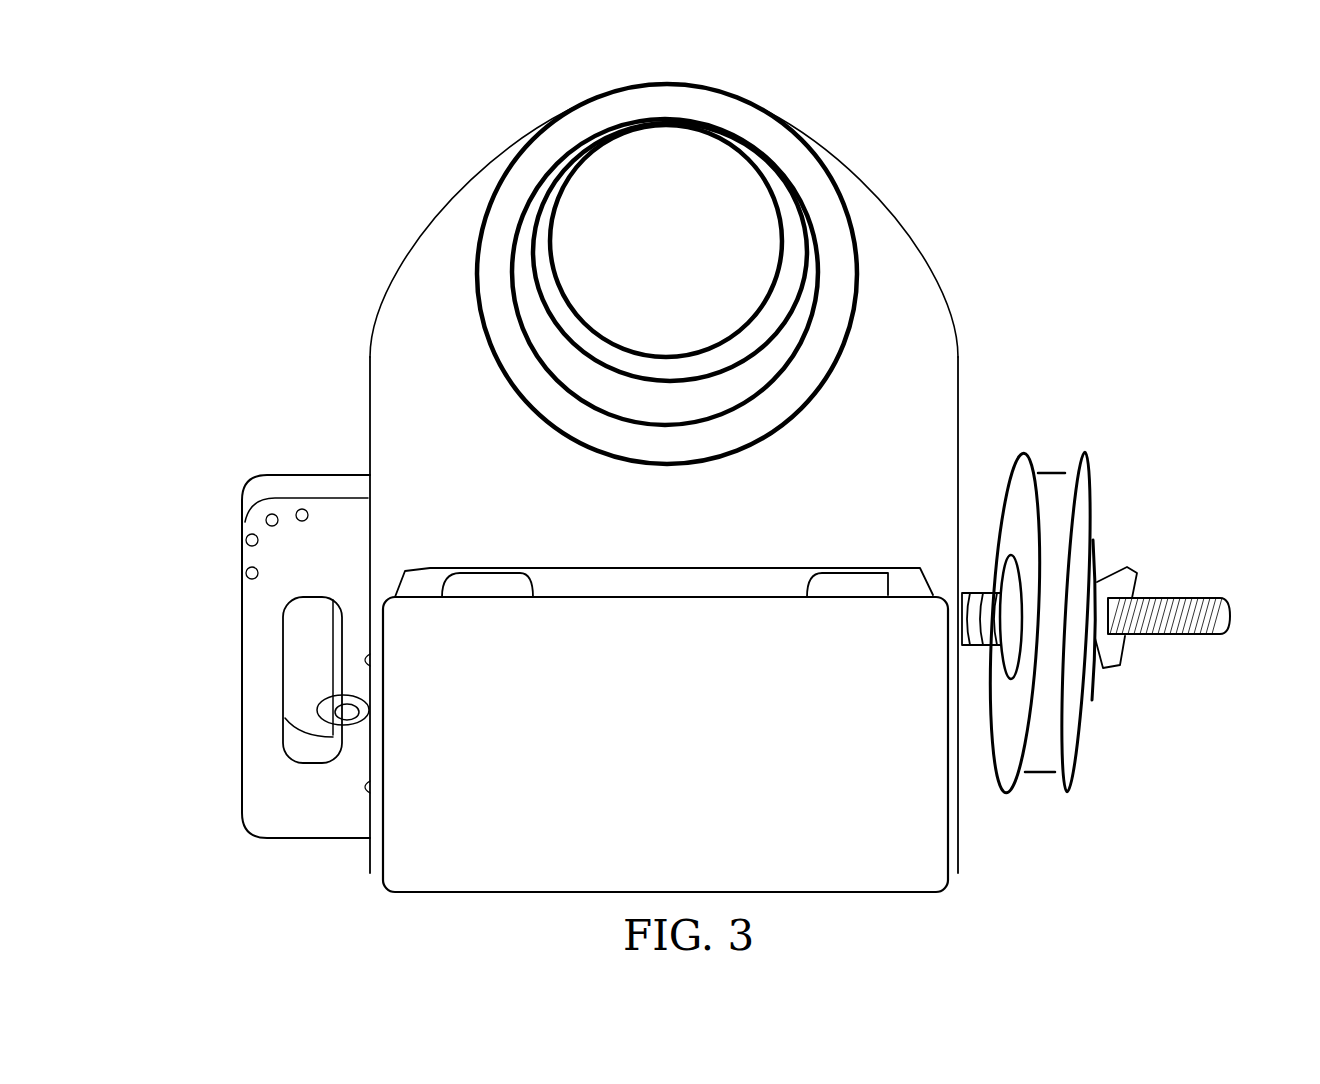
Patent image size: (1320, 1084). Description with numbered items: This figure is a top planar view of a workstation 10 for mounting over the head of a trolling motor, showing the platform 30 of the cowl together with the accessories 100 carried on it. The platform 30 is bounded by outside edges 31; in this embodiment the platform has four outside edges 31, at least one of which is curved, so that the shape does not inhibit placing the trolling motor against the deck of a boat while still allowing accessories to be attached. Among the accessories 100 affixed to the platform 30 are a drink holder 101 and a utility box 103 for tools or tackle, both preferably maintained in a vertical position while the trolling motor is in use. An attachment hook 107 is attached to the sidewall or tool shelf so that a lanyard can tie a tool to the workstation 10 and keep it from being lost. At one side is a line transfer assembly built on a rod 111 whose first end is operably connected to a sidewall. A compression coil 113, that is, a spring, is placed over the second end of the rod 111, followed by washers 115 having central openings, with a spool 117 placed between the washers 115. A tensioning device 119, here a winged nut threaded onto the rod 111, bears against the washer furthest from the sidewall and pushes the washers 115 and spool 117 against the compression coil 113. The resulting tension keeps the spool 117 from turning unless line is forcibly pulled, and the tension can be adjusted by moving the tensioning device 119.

The workstation 10 is at (245, 127).
The platform 30 is at (662, 532).
The outside edge 31 is at (871, 184).
The drink holder 101 is at (748, 125).
The utility box 103 is at (590, 743).
The accessories 100 is at (297, 678).
The attachment hook 107 is at (352, 723).
The compression coil 113 is at (968, 590).
The washers 115 is at (1008, 653).
The spool 117 is at (1047, 482).
The tensioning device 119 is at (1115, 573).
The rod 111 is at (1170, 620).